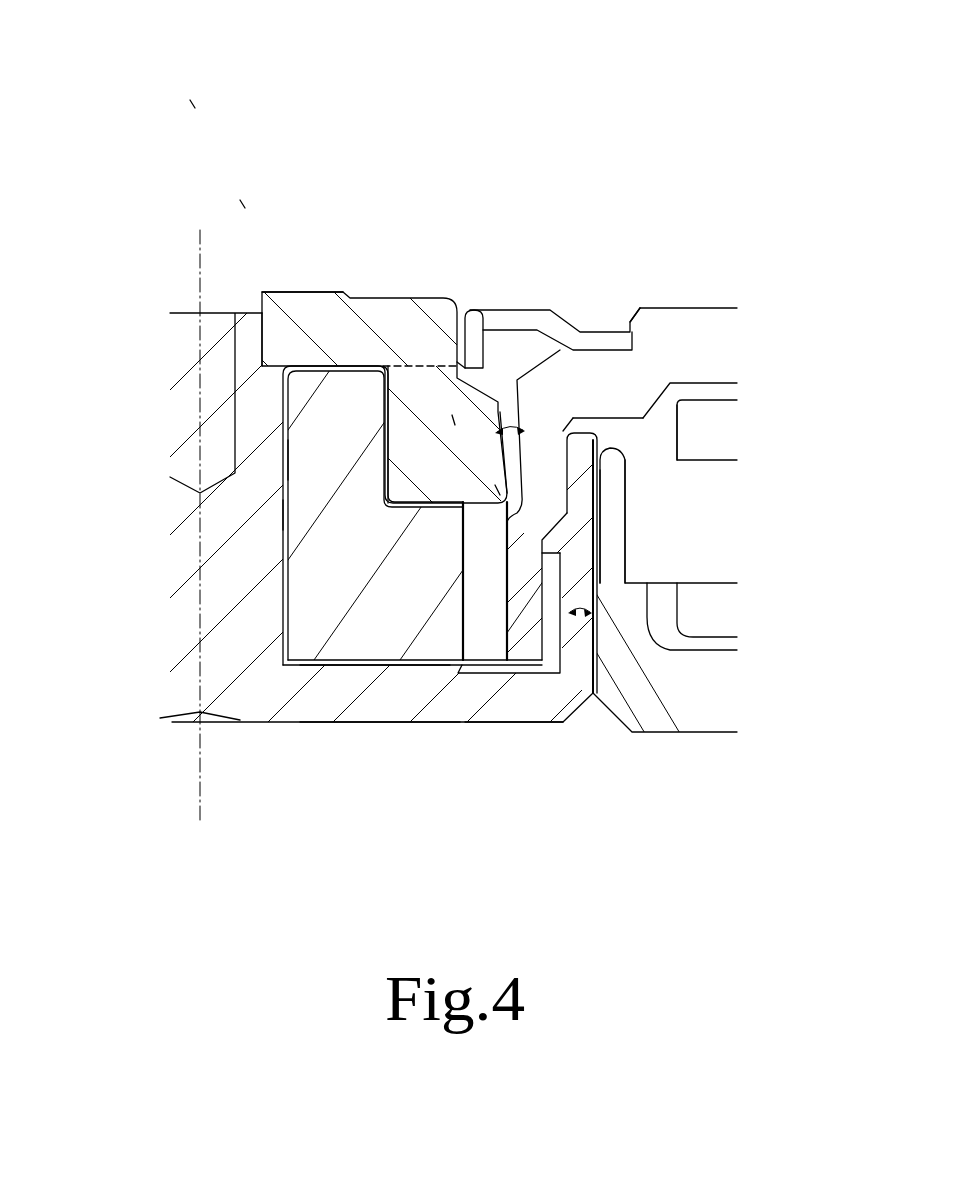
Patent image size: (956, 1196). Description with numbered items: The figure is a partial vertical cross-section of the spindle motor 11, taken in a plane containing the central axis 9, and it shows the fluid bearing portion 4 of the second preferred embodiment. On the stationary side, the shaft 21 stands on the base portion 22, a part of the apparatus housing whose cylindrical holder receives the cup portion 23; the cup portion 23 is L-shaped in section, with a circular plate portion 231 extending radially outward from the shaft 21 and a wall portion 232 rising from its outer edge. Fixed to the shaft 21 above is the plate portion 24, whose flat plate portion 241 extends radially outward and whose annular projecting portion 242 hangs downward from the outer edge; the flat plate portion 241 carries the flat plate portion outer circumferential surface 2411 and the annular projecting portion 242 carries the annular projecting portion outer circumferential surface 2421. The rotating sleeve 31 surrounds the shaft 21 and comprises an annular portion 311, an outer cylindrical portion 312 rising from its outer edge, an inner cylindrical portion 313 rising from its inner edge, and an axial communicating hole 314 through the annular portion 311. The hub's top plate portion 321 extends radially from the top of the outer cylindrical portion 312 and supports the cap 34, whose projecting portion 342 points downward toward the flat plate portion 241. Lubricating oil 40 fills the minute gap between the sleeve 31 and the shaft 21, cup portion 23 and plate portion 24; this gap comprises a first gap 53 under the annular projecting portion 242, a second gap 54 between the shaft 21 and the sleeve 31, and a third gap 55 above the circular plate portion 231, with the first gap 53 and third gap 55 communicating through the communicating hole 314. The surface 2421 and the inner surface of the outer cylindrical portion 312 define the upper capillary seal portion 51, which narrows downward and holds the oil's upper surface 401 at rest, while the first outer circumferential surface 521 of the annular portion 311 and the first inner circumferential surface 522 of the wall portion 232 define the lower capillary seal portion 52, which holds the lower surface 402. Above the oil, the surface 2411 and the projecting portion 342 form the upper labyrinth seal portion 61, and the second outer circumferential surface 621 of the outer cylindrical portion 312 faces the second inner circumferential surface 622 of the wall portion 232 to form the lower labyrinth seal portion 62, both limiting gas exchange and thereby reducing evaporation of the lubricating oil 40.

The fluid bearing portion 4 is at (233, 196).
The central axis 9 is at (200, 270).
The spindle motor 11 is at (187, 97).
The shaft 21 is at (193, 600).
The base portion 22 is at (708, 735).
The cup portion 23 is at (403, 882).
The circular plate portion 231 is at (380, 700).
The wall portion 232 is at (583, 645).
The plate portion 24 is at (288, 204).
The flat plate portion 241 is at (328, 335).
The annular projecting portion 242 is at (388, 350).
The flat plate portion outer circumferential surface 2411 is at (462, 356).
The annular projecting portion outer circumferential surface 2421 is at (505, 400).
The sleeve 31 is at (283, 425).
The annular portion 311 is at (390, 668).
The outer cylindrical portion 312 is at (688, 457).
The inner cylindrical portion 313 is at (330, 460).
The communicating hole 314 is at (500, 667).
The top plate portion 321 is at (706, 355).
The cap 34 is at (568, 428).
The projecting portion 342 is at (473, 347).
The lubricating oil 40 is at (270, 318).
The upper surface of the lubricating oil 401 is at (519, 462).
The lower surface of the lubricating oil 402 is at (575, 622).
The upper capillary seal portion 51 is at (622, 332).
The lower capillary seal portion 52 is at (660, 617).
The first outer circumferential surface 521 is at (613, 553).
The first inner circumferential surface 522 is at (554, 647).
The first gap 53 is at (500, 495).
The second gap 54 is at (284, 513).
The third gap 55 is at (480, 630).
The upper labyrinth seal portion 61 is at (453, 422).
The lower labyrinth seal portion 62 is at (613, 482).
The second outer circumferential surface 621 is at (627, 507).
The second inner circumferential surface 622 is at (600, 440).